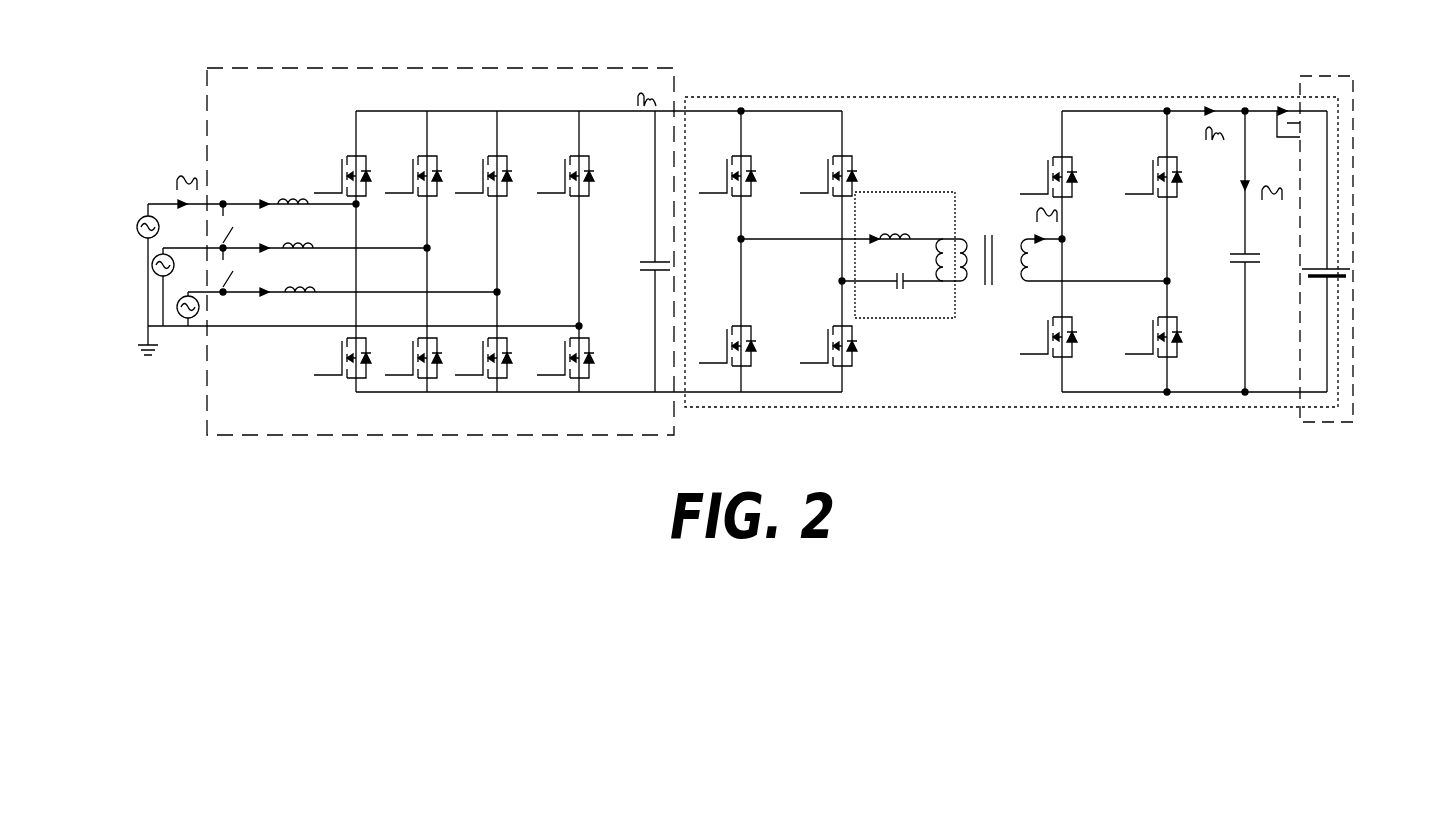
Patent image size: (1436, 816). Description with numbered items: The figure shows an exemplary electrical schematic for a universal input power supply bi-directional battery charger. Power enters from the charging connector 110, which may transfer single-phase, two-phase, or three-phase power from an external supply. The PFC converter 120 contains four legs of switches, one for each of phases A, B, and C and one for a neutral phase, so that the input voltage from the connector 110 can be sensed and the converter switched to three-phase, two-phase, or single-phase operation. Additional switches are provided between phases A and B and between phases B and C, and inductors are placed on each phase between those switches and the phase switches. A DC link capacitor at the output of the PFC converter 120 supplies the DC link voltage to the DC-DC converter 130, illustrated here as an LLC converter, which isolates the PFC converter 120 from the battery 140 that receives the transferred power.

The charging connector 110 is at (143, 290).
The Power Factor Correction (PFC) converter 120 is at (428, 68).
The DC-DC converter 130 is at (872, 96).
The battery 140 is at (1353, 97).